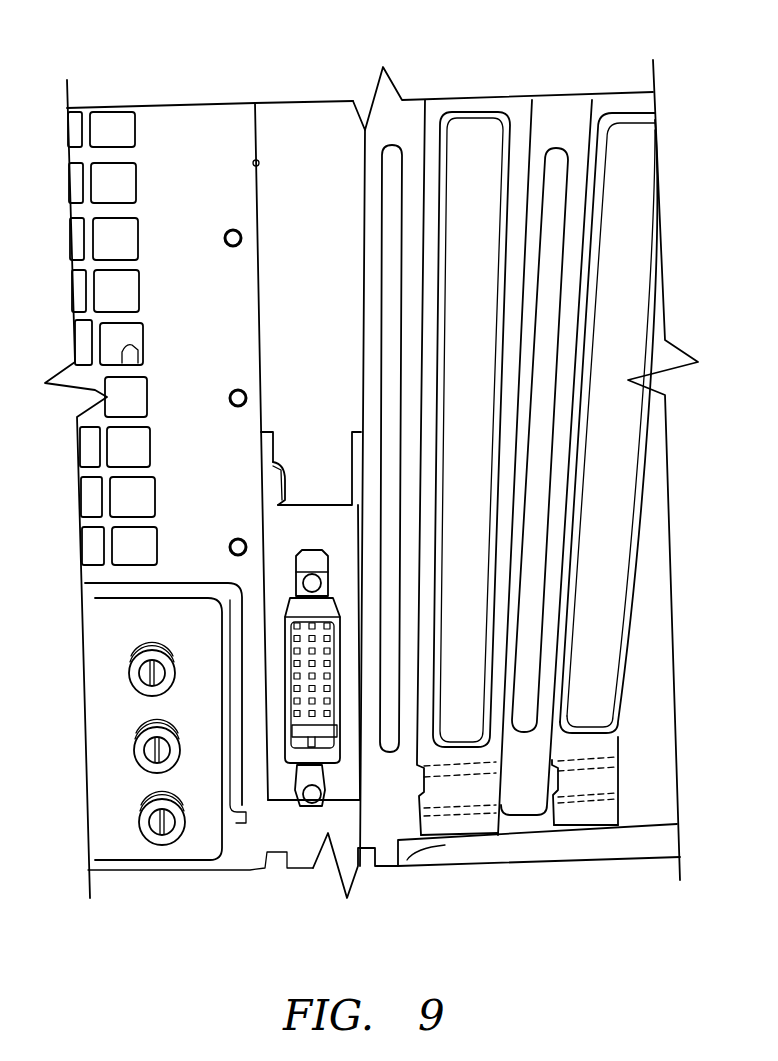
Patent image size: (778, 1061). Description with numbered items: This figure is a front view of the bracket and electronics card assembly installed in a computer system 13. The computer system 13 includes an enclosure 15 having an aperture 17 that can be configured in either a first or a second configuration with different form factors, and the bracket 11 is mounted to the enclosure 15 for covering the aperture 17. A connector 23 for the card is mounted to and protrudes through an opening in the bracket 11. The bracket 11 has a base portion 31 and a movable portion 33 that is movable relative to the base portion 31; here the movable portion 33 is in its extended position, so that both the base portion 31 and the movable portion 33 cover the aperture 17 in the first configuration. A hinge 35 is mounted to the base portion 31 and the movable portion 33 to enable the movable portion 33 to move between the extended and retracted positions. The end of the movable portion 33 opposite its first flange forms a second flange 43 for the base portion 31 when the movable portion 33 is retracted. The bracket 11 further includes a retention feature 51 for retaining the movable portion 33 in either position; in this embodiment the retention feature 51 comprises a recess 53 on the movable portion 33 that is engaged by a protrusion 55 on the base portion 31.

The bracket 11 is at (253, 313).
The computer system 13 is at (487, 62).
The enclosure 15 is at (167, 124).
The aperture 17 is at (255, 162).
The connector 23 is at (283, 647).
The base portion 31 is at (272, 775).
The movable portion 33 is at (270, 223).
The hinge 35 is at (302, 513).
The second flange 43 is at (317, 463).
The retention feature 51 is at (255, 442).
The recess 53 is at (287, 470).
The protrusion 55 is at (285, 477).